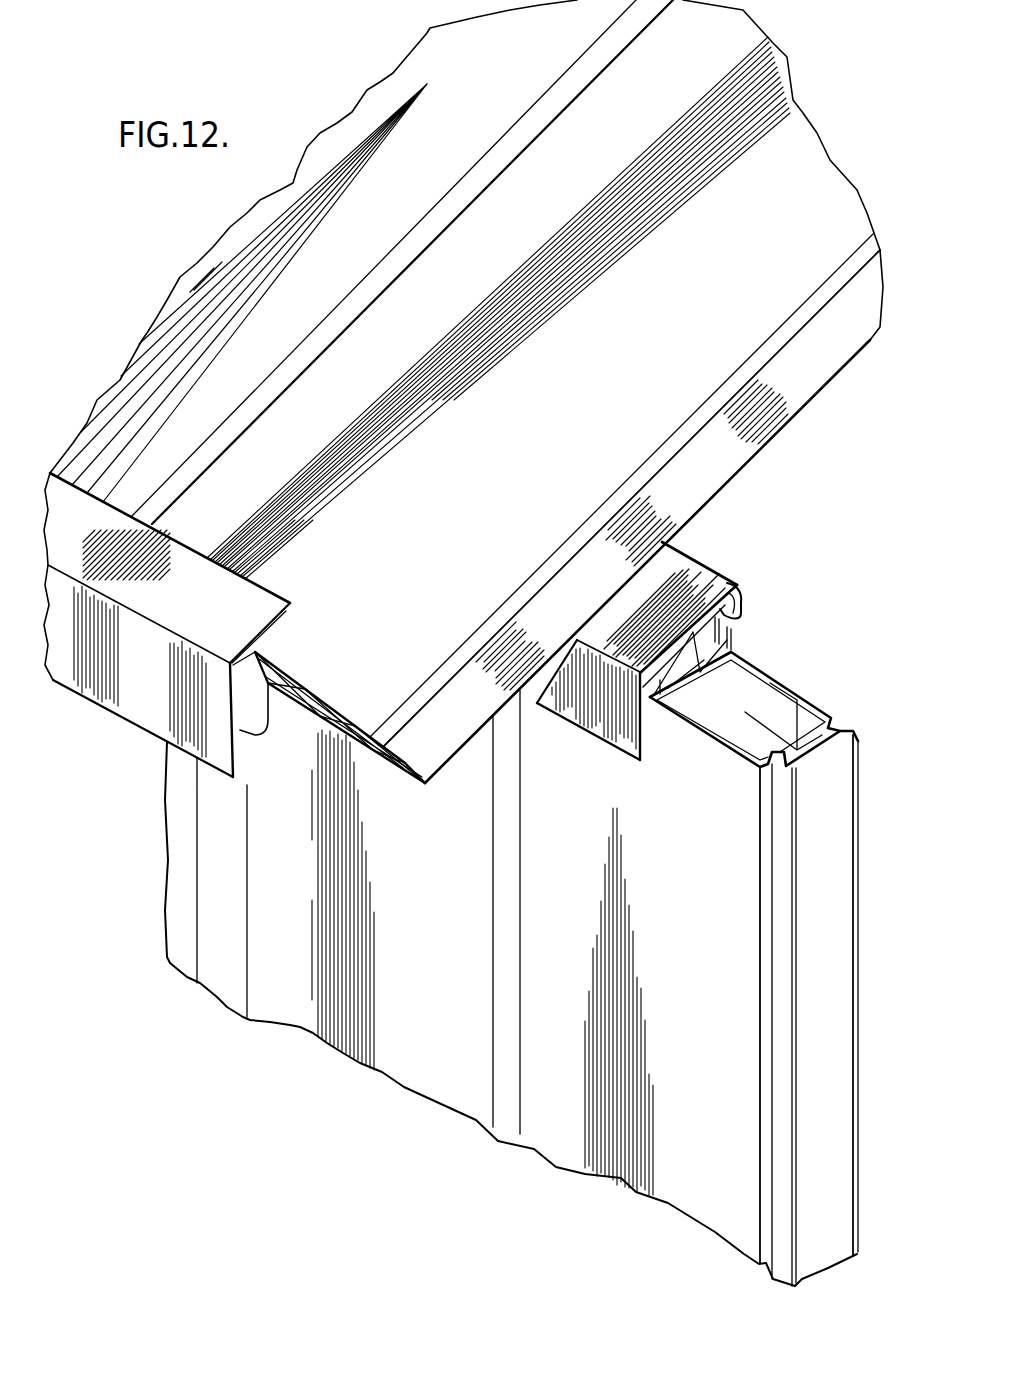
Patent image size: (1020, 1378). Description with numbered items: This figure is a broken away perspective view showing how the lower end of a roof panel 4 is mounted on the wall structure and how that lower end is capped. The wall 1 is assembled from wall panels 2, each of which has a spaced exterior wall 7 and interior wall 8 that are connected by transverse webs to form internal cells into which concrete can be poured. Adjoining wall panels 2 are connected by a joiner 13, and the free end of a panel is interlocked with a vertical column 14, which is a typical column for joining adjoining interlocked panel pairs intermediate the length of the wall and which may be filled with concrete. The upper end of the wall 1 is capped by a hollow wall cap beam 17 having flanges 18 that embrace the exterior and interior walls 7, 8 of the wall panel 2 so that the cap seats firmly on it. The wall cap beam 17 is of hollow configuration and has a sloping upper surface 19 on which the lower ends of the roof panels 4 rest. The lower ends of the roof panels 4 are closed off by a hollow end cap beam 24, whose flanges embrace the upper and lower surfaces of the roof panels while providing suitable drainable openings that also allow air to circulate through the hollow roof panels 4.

The wall 1 is at (868, 868).
The wall panel 2 is at (567, 1120).
The roof panel 4 is at (390, 90).
The exterior wall 7 is at (700, 733).
The interior wall 8 is at (773, 673).
The joiner 13 is at (503, 887).
The vertical column 14 is at (210, 835).
The wall cap beam 17 is at (753, 570).
The flange 18 is at (736, 645).
The sloping upper surface 19 is at (690, 567).
The end cap beam 24 is at (127, 695).